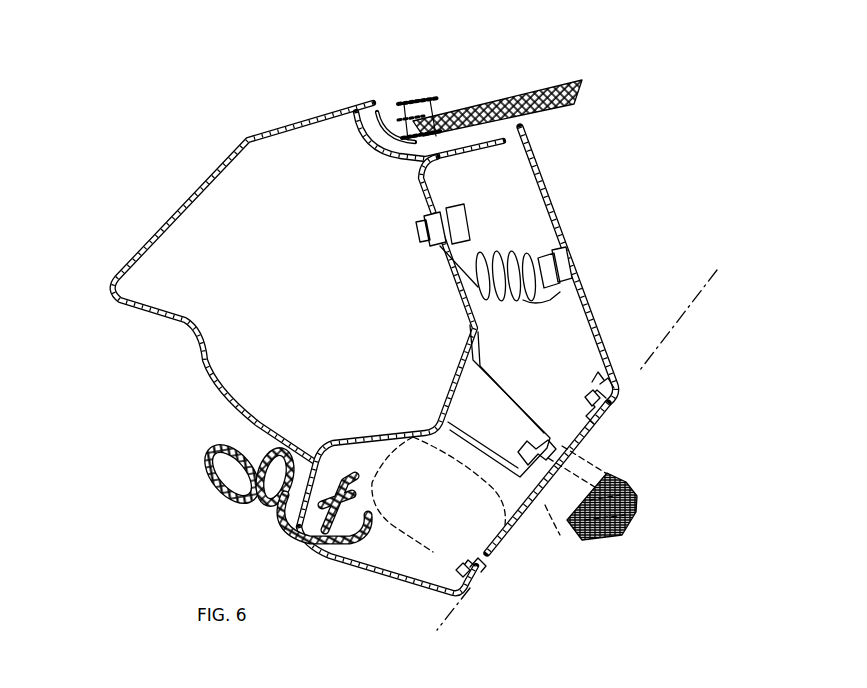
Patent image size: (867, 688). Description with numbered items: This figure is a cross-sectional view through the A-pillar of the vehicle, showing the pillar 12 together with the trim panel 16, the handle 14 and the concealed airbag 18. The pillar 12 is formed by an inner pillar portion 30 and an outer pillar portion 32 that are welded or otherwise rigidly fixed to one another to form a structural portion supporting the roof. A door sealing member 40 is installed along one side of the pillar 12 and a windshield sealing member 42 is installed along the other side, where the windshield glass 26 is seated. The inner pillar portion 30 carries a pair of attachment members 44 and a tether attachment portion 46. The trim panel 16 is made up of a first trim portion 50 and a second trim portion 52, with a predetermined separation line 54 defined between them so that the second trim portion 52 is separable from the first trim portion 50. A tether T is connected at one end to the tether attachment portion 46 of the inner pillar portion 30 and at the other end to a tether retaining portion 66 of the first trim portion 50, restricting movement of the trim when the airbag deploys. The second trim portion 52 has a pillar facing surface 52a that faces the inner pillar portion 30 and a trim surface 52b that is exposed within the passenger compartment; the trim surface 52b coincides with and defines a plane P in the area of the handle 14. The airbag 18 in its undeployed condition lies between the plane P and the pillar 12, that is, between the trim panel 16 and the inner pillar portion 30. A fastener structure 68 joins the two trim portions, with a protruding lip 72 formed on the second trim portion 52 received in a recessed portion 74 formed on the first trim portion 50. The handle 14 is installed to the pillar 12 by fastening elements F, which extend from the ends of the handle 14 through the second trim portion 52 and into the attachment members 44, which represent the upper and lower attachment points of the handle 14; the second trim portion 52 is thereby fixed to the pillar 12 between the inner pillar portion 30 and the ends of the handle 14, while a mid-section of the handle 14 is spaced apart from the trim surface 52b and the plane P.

The pillar 12 is at (236, 282).
The outer pillar portion 32 is at (166, 229).
The windshield sealing member 42 is at (413, 94).
The window glass 26 is at (500, 102).
The trim panel 16 is at (569, 343).
The tether T is at (509, 254).
The tether attachment portion 46 is at (438, 242).
The tether retaining portion 66 is at (574, 260).
The first trim portion 50 is at (607, 333).
The plane P is at (693, 288).
The attachment members 44 is at (506, 390).
The fastener structure 68 is at (592, 376).
The recessed portion 74 is at (584, 402).
The protruding lip 72 is at (616, 381).
The separation line 54 is at (612, 410).
The fastening elements F is at (592, 465).
The inner pillar portion 30 is at (372, 427).
The pillar facing surface 52a is at (498, 488).
The airbag 18 is at (412, 537).
The second trim portion 52 is at (500, 540).
The trim surface 52b is at (560, 514).
The handle 14 is at (627, 528).
The door sealing member 40 is at (212, 488).